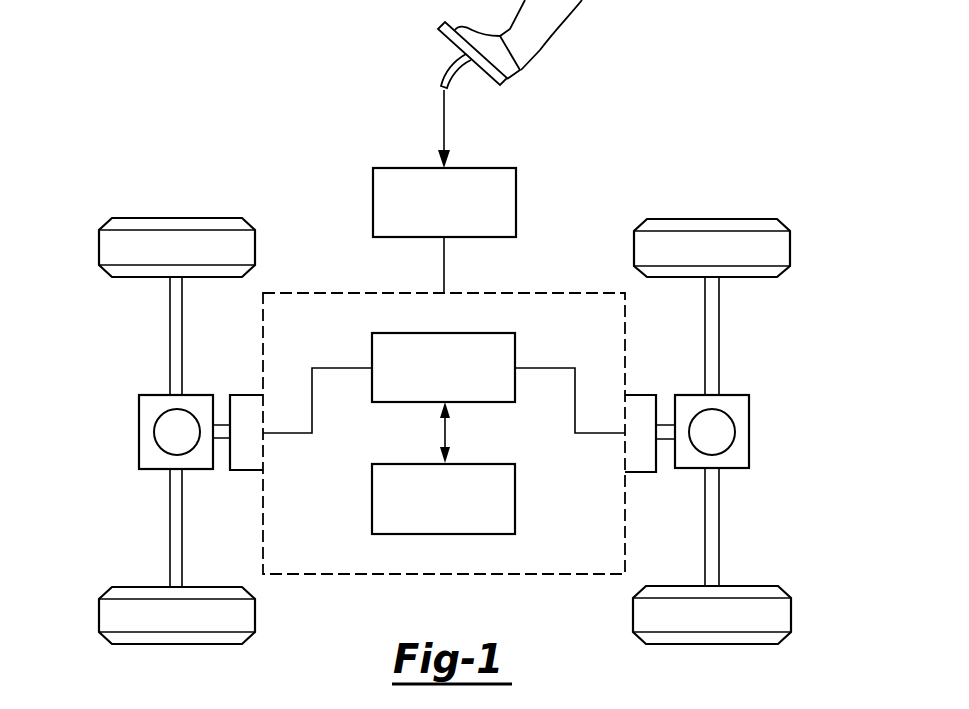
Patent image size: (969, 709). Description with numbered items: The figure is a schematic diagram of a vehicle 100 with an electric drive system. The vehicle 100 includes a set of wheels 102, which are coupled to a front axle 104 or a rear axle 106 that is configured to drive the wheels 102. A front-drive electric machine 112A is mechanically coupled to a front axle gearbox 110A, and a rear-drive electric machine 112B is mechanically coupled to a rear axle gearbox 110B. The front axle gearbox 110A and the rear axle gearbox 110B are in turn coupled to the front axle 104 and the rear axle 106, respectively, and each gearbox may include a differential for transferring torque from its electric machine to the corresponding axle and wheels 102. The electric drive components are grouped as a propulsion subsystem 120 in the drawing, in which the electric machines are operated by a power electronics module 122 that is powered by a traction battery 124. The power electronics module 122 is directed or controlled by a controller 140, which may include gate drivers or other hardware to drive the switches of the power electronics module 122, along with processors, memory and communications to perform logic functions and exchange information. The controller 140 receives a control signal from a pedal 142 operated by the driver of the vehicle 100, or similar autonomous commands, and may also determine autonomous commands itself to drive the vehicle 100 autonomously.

The vehicle 100 is at (750, 108).
The wheels 102 is at (178, 217).
The front axle 104 is at (719, 332).
The rear axle 106 is at (170, 333).
The front axle gearbox 110A is at (749, 432).
The rear axle gearbox 110B is at (139, 432).
The front-drive electric machine 112A is at (641, 395).
The rear-drive electric machine 112B is at (247, 395).
The electric propulsion system 120 is at (522, 268).
The power electronics module 122 is at (515, 345).
The traction battery 124 is at (515, 500).
The controller 140 is at (390, 168).
The pedal 142 is at (442, 38).